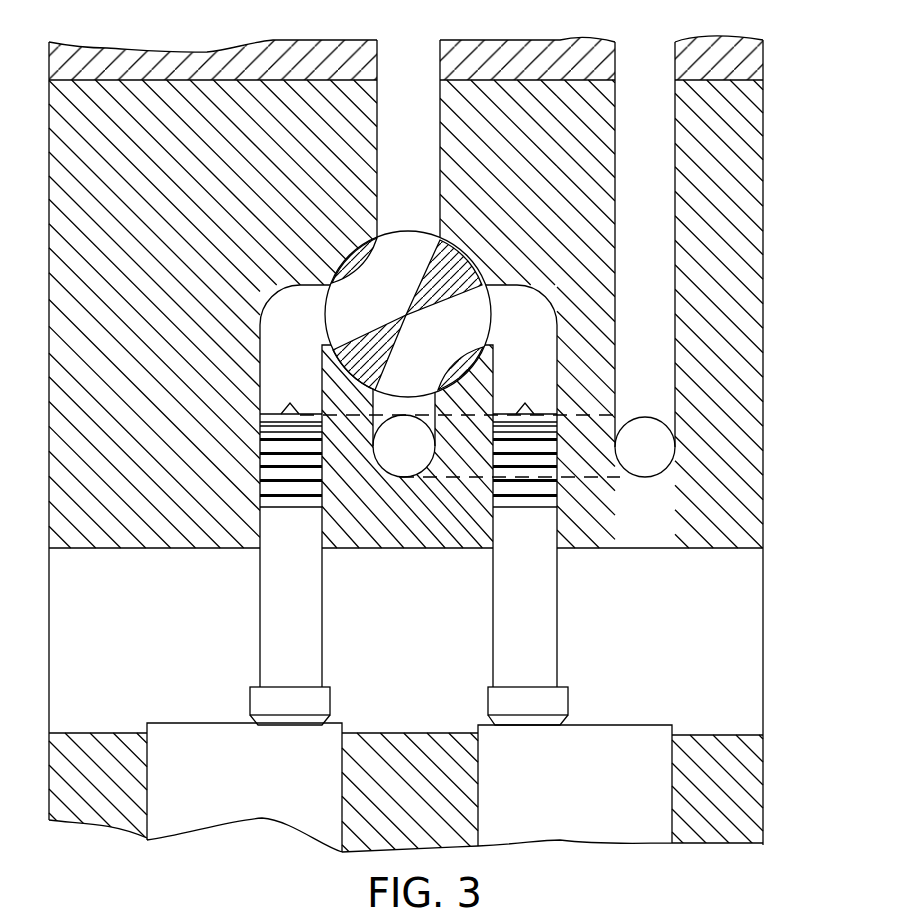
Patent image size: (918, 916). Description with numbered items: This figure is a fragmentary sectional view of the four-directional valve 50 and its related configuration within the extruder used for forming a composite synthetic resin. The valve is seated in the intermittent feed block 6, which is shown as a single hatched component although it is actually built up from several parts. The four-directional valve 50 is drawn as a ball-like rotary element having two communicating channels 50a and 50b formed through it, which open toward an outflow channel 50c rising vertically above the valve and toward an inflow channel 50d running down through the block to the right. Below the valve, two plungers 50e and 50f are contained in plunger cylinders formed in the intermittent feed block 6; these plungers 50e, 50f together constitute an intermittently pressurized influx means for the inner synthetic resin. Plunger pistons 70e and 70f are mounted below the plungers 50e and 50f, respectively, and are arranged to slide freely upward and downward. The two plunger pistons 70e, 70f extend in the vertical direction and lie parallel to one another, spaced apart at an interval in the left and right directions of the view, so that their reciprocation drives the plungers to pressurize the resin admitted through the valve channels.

The intermittent feed block 6 is at (779, 255).
The four-directional valve 50 is at (574, 314).
The communicating channel 50a is at (395, 310).
The communicating channel 50b is at (470, 344).
The outflow channel 50c is at (437, 163).
The inflow channel 50d is at (672, 224).
The plunger 50e is at (260, 457).
The plunger 50f is at (560, 517).
The plunger piston 70e is at (260, 612).
The plunger piston 70f is at (558, 628).